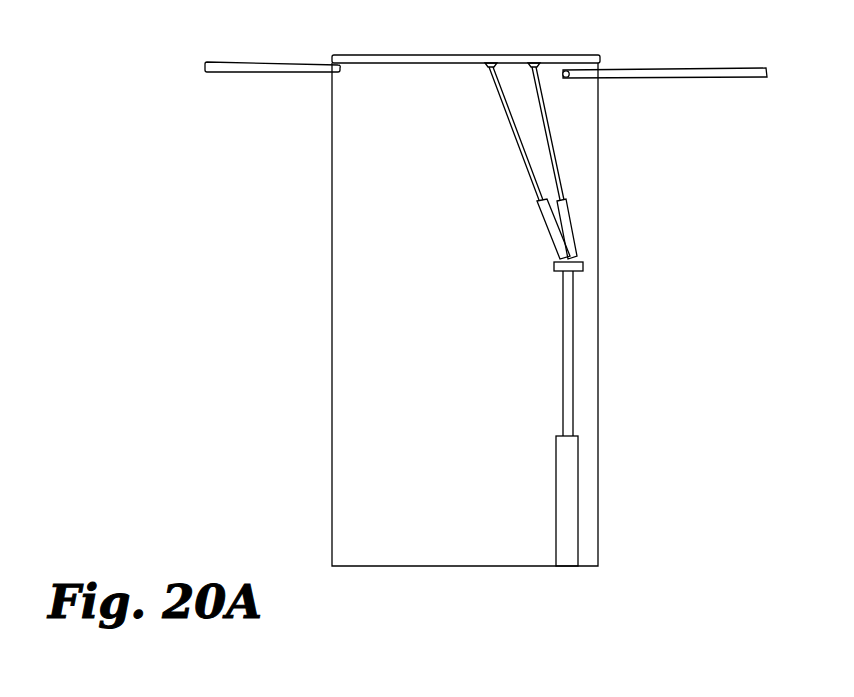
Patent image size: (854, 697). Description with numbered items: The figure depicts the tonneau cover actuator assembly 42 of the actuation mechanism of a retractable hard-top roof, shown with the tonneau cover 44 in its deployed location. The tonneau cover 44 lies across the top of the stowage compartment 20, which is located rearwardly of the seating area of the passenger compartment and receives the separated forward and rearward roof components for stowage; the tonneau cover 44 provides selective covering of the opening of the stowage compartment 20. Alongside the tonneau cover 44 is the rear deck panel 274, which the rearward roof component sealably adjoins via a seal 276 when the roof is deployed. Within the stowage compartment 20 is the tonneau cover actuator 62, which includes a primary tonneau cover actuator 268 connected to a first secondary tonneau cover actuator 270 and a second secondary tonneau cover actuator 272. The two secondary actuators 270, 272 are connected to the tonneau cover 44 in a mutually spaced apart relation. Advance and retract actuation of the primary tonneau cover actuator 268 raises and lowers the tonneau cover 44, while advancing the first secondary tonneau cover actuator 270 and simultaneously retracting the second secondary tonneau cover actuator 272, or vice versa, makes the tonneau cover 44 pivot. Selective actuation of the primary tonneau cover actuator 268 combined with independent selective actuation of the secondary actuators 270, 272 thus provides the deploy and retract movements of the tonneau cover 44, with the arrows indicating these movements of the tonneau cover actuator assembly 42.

The stowage compartment 20 is at (366, 422).
The tonneau cover 44 is at (420, 55).
The rear deck panel 274 is at (655, 68).
The seal 276 is at (569, 78).
The first secondary tonneau cover actuator 270 is at (547, 232).
The second secondary tonneau cover actuator 272 is at (570, 220).
The tonneau cover actuator 62 is at (537, 259).
The primary tonneau cover actuator 268 is at (578, 497).
The tonneau cover actuator assembly 42 is at (517, 442).